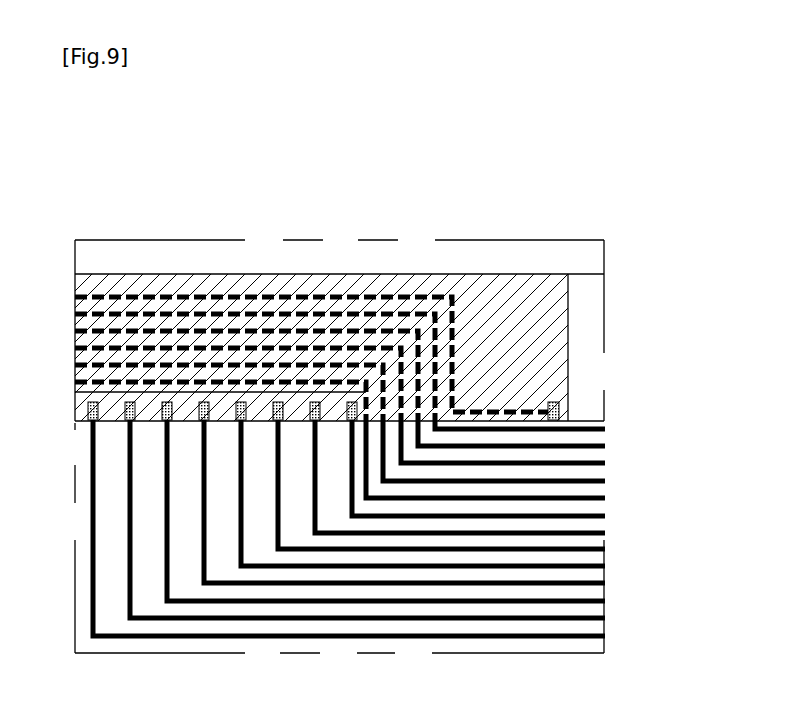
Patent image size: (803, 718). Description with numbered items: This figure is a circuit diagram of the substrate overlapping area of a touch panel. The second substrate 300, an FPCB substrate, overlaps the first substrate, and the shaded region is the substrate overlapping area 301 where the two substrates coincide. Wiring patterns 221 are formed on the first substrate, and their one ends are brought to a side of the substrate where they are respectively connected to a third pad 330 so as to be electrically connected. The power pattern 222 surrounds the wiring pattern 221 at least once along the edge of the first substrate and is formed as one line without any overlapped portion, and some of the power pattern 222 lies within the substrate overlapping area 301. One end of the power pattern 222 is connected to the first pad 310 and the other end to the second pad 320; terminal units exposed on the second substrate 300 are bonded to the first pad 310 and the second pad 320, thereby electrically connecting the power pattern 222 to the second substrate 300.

The second substrate 300 is at (513, 302).
The substrate overlapping area 301 is at (565, 345).
The first pad 310 is at (560, 407).
The second pad 320 is at (368, 377).
The third pad 330 is at (232, 365).
The wiring pattern 221 is at (607, 532).
The power pattern 222 is at (607, 430).